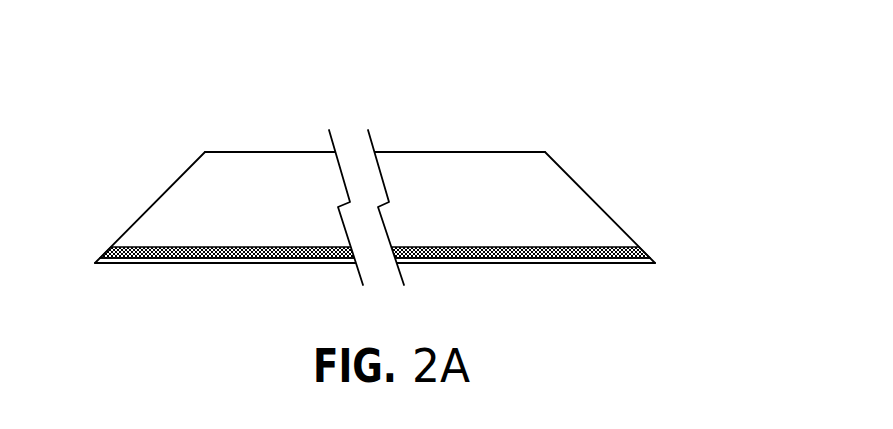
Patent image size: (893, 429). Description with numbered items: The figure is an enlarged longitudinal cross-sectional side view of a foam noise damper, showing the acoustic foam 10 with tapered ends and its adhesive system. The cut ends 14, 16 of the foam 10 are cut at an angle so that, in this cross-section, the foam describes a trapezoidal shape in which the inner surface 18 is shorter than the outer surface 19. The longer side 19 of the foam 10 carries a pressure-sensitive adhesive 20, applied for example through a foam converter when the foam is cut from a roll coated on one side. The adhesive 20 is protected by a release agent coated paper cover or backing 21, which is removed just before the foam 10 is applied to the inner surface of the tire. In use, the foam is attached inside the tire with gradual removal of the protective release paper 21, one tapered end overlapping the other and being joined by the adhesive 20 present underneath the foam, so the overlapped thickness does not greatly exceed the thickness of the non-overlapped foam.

The foam 10 is at (397, 188).
The cut end 14 is at (162, 197).
The cut end 16 is at (578, 183).
The inner surface 18 is at (260, 152).
The outer surface 19 is at (568, 247).
The adhesive 20 is at (625, 257).
The release coated paper 21 is at (157, 263).